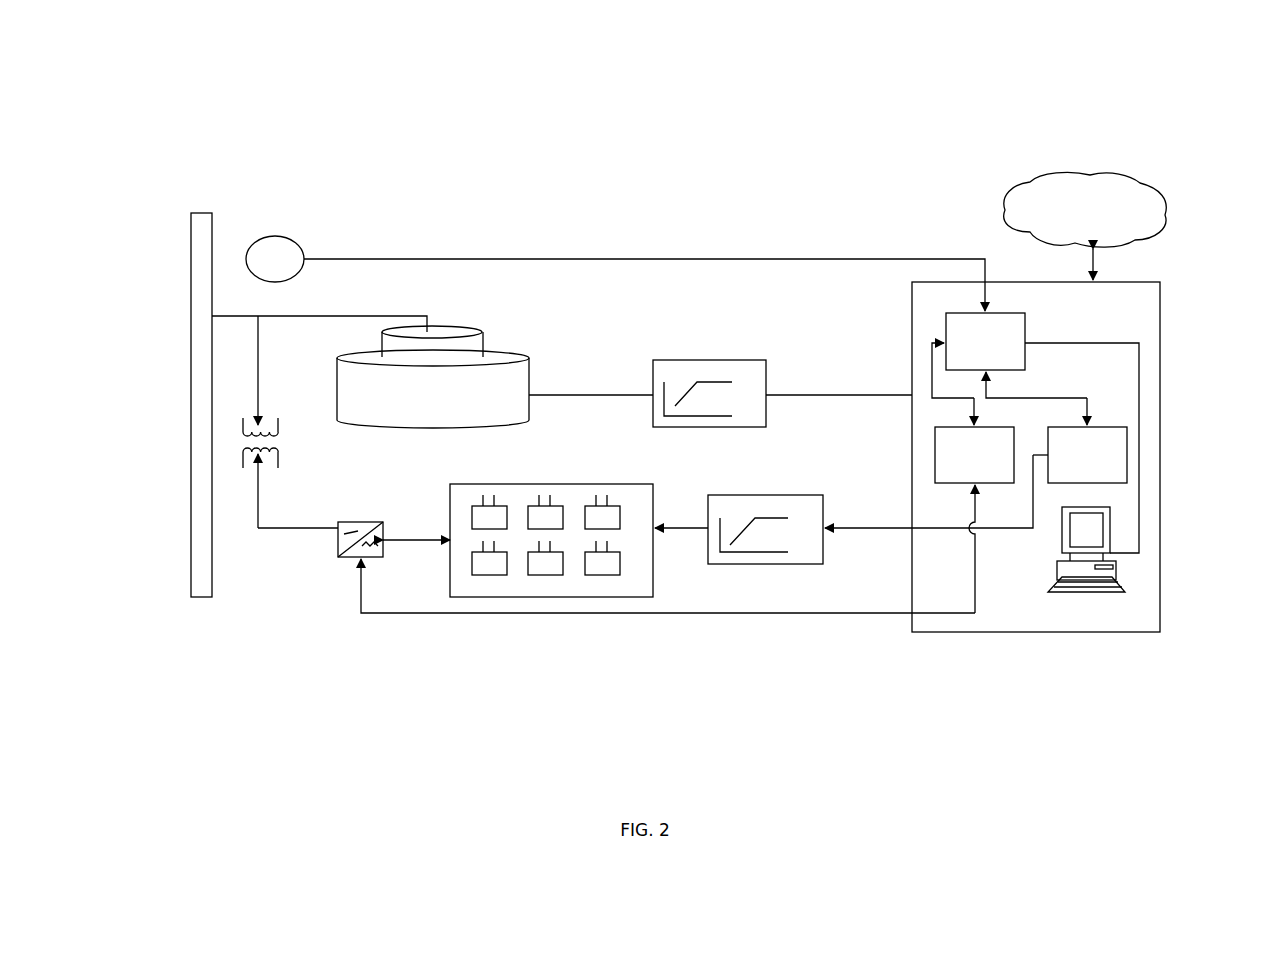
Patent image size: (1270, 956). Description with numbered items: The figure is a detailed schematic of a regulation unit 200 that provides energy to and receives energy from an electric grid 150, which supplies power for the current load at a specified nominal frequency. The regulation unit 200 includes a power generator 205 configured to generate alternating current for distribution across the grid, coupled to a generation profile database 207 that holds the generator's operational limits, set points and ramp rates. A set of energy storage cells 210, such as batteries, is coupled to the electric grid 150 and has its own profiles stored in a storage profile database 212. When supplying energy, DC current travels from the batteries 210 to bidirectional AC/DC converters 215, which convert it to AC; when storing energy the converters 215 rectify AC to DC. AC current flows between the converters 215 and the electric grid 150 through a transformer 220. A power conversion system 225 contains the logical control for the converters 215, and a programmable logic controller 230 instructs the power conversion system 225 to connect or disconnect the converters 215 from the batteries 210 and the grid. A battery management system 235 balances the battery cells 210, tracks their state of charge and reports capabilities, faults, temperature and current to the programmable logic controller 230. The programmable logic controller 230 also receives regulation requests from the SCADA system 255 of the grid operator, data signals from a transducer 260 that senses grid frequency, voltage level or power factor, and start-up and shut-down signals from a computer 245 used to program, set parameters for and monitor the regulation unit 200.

The regulation unit 200 is at (515, 108).
The electric grid 150 is at (200, 597).
The transducer 260 is at (290, 222).
The transformer 220 is at (278, 458).
The bidirectional AC/DC converters 215 is at (338, 538).
The power generator 205 is at (450, 325).
The generation profile database 207 is at (685, 360).
The energy storage cells 210 is at (575, 484).
The storage profile database 212 is at (745, 495).
The SCADA system 255 is at (1030, 182).
The programmable logic controller 230 is at (1025, 325).
The power conversion system 225 is at (935, 443).
The battery management system 235 is at (1127, 450).
The computer 245 is at (1125, 583).